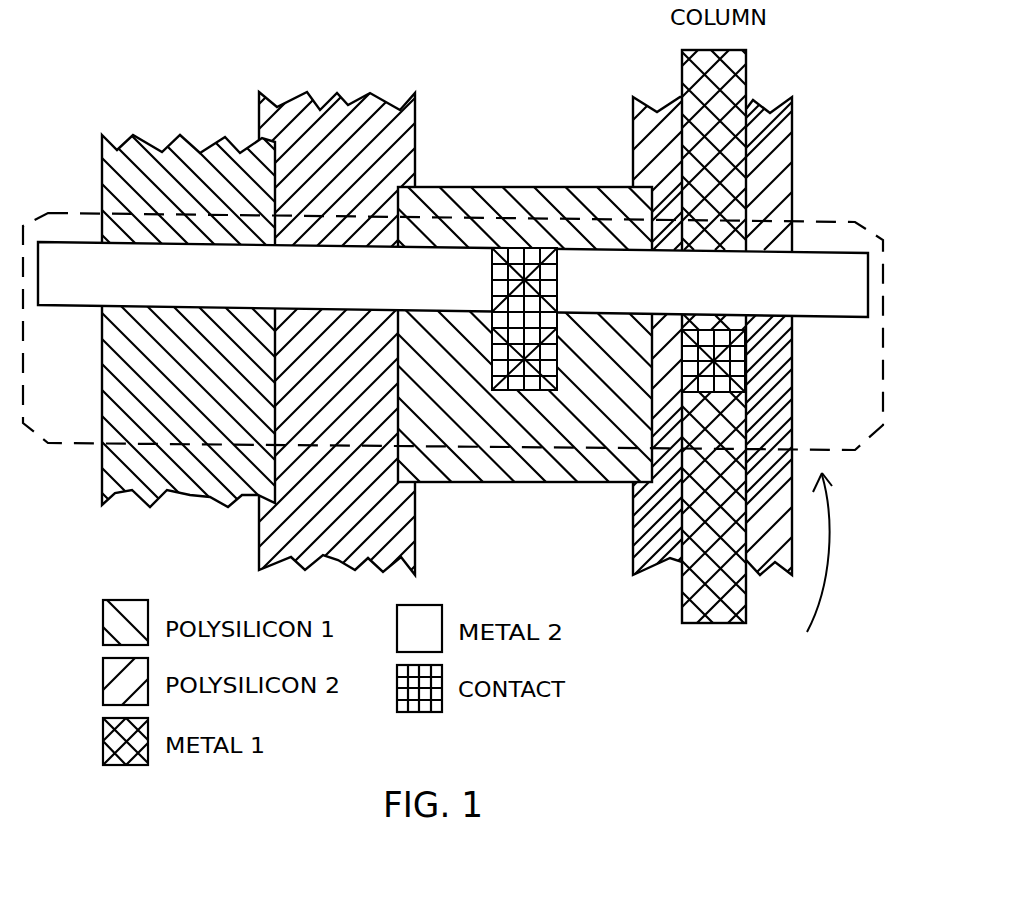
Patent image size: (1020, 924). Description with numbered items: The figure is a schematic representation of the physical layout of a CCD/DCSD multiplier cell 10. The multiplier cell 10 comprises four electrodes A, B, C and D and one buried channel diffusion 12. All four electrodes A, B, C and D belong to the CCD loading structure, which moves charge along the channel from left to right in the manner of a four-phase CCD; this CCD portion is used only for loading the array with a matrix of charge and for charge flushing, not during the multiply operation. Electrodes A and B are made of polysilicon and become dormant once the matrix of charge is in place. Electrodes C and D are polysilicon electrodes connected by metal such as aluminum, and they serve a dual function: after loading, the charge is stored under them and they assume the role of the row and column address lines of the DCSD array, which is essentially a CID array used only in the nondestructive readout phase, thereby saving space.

The multiplier cell 10 is at (510, 336).
The buried channel diffusion 12 is at (878, 432).
The electrode A is at (317, 320).
The electrode B is at (338, 334).
The electrode C is at (522, 335).
The electrode D is at (692, 336).